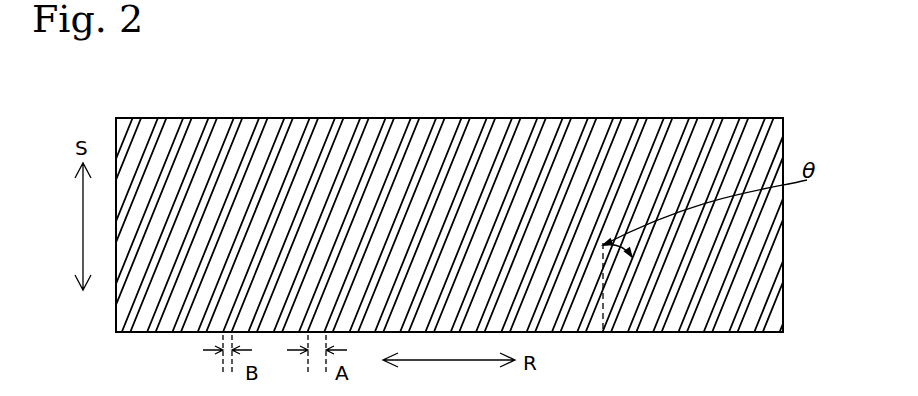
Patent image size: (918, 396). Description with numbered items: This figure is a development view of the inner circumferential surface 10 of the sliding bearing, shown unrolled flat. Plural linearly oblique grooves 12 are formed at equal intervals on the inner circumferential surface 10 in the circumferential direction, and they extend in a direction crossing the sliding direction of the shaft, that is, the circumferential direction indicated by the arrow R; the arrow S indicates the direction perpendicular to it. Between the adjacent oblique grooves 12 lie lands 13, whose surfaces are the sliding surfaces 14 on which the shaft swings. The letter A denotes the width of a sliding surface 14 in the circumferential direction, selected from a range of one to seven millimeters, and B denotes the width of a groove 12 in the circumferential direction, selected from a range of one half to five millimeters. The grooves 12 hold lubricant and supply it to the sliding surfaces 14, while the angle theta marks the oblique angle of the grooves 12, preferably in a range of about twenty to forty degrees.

The inner circumferential surface 10 is at (497, 133).
The grooves 12 is at (213, 118).
The lands 13 is at (302, 118).
The sliding surfaces 14 is at (475, 123).